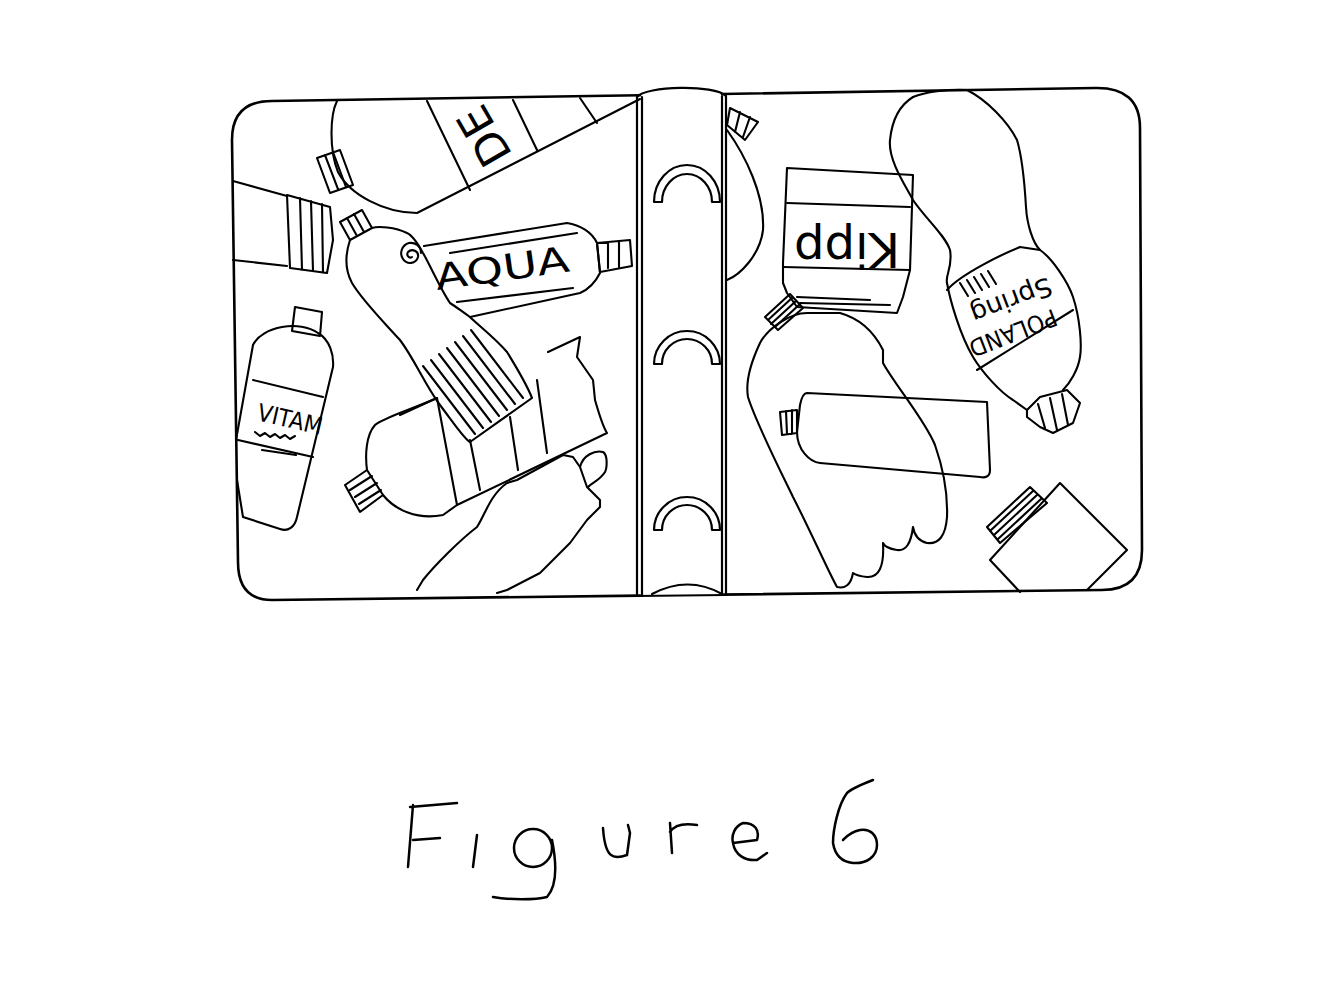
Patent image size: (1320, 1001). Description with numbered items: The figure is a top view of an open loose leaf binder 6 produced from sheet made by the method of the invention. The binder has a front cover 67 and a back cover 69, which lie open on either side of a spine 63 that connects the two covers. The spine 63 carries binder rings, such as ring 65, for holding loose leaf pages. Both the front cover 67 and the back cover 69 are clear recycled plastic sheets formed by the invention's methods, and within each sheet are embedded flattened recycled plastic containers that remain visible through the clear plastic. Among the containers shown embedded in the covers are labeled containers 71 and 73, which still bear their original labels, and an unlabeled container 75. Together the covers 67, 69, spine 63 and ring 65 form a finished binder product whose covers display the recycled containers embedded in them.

The binder storage system 6 is at (724, 346).
The spine 63 is at (675, 123).
The ring 65 is at (764, 417).
The front cover 67 is at (263, 288).
The back cover 69 is at (1210, 407).
The labeled container 71 is at (408, 482).
The labeled container 73 is at (430, 325).
The unlabeled container 75 is at (947, 450).